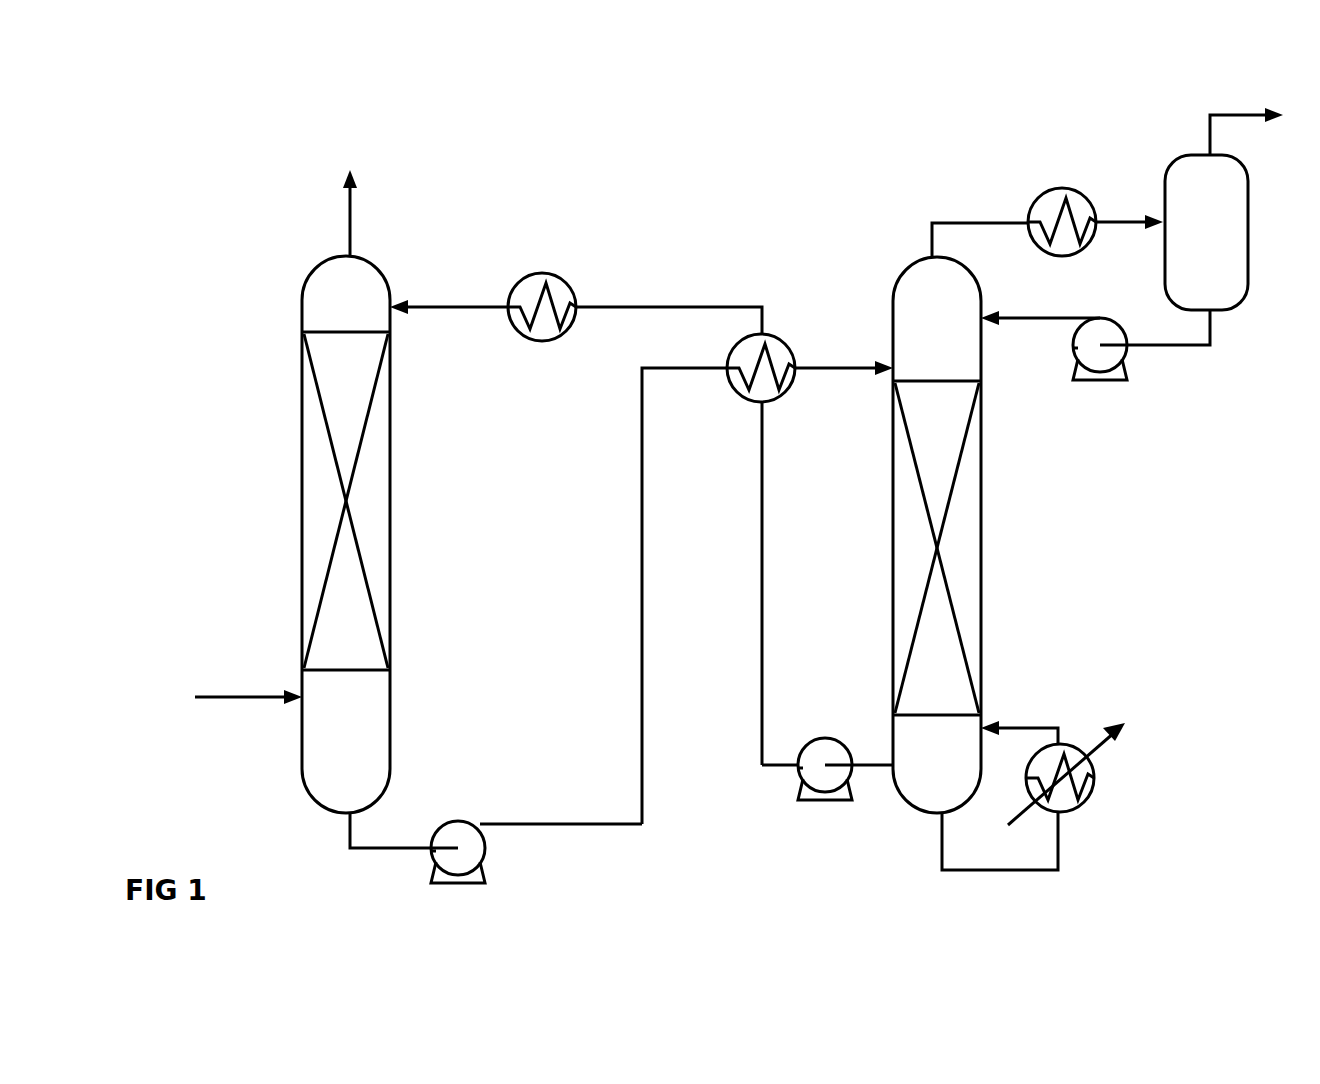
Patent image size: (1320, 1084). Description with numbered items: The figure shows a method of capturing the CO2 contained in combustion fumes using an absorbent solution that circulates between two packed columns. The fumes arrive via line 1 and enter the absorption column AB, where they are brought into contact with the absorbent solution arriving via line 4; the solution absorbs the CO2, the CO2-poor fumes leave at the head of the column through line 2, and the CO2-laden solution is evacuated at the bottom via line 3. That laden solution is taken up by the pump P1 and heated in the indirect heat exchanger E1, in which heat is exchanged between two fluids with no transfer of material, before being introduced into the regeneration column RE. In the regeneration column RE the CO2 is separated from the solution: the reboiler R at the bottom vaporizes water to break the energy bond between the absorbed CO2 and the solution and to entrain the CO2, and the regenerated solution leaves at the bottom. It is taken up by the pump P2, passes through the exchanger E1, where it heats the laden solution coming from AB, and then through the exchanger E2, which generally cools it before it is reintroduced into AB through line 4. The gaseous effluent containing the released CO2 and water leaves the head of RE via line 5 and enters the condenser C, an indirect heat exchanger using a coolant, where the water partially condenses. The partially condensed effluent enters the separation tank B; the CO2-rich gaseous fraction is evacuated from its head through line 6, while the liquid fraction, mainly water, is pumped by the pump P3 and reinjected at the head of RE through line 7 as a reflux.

The absorption column AB is at (300, 478).
The regeneration column RE is at (981, 493).
The indirect heat exchanger E1 is at (786, 392).
The heat exchanger E2 is at (542, 270).
The condenser C is at (1062, 188).
The reboiler R is at (1095, 778).
The separation tank B is at (1250, 232).
The pump P1 is at (450, 822).
The pump P2 is at (828, 800).
The pump P3 is at (1105, 380).
The line 1 is at (238, 697).
The line 2 is at (350, 220).
The line 3 is at (393, 848).
The line 4 is at (438, 312).
The line 5 is at (977, 222).
The line 6 is at (1240, 115).
The line 7 is at (1035, 312).